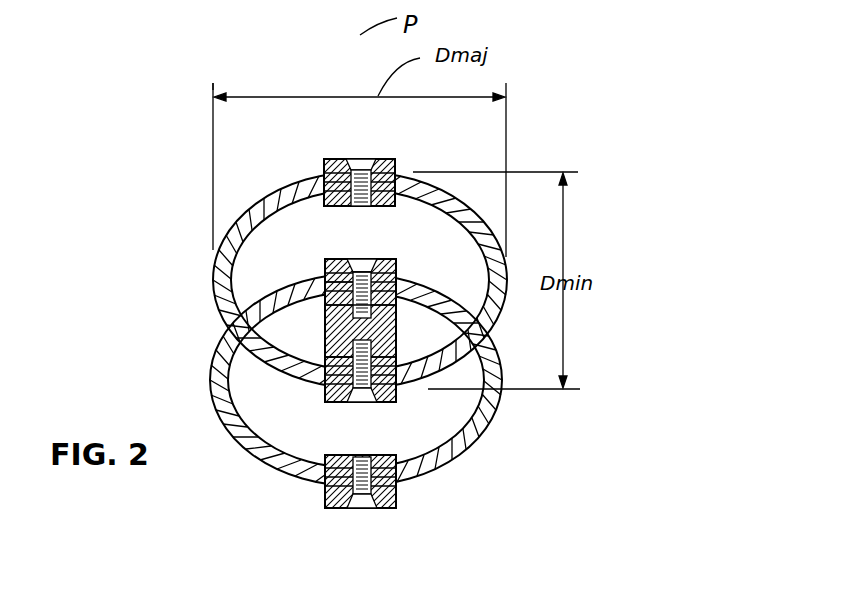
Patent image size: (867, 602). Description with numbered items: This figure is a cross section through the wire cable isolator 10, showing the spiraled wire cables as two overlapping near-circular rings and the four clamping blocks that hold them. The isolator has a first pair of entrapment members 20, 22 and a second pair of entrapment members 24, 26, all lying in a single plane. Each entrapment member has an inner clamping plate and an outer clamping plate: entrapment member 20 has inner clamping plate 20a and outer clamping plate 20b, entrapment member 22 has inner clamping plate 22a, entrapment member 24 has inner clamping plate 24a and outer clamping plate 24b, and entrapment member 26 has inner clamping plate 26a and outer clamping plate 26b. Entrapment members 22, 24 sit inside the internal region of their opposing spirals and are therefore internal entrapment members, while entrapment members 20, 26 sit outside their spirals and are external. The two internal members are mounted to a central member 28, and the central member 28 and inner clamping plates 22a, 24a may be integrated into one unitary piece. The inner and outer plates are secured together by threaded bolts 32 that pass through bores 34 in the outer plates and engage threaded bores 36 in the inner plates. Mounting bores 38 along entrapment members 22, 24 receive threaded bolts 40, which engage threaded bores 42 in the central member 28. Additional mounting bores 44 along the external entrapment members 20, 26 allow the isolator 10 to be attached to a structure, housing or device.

The wire cable isolator 10 is at (291, 84).
The entrapment member 20 is at (346, 176).
The inner clamping plate 20a is at (340, 205).
The outer clamping plate 20b is at (323, 158).
The entrapment member 22 is at (369, 370).
The inner clamping plate 22a is at (355, 318).
The entrapment member 24 is at (361, 308).
The inner clamping plate 24a is at (400, 294).
The outer clamping plate 24b is at (392, 260).
The entrapment member 26 is at (351, 499).
The inner clamping plate 26a is at (382, 465).
The outer clamping plate 26b is at (390, 495).
The central member 28 is at (392, 325).
The threaded bolt 32 is at (363, 158).
The bore 34 is at (397, 158).
The threaded bore 36 is at (414, 183).
The mounting bore 38 is at (368, 258).
The threaded bolt 40 is at (360, 262).
The threaded bore 42 is at (322, 292).
The mounting bore 44 is at (362, 500).